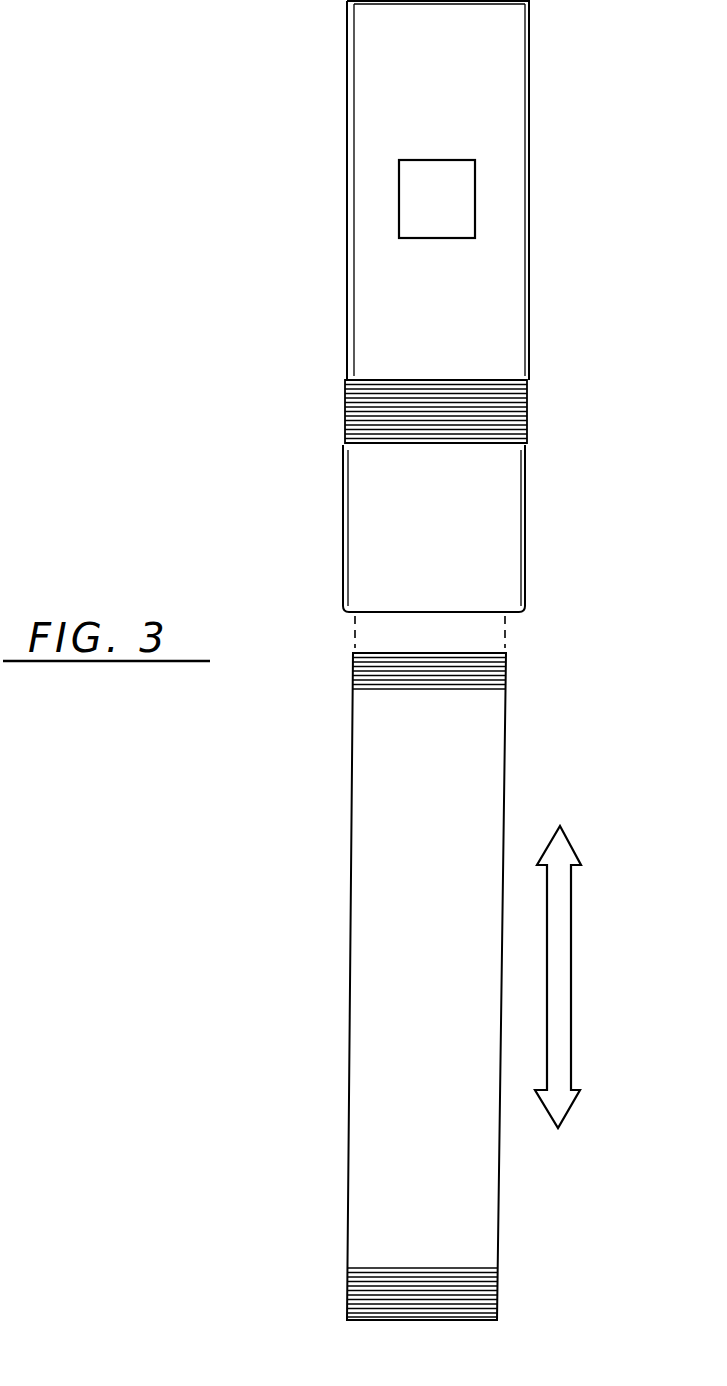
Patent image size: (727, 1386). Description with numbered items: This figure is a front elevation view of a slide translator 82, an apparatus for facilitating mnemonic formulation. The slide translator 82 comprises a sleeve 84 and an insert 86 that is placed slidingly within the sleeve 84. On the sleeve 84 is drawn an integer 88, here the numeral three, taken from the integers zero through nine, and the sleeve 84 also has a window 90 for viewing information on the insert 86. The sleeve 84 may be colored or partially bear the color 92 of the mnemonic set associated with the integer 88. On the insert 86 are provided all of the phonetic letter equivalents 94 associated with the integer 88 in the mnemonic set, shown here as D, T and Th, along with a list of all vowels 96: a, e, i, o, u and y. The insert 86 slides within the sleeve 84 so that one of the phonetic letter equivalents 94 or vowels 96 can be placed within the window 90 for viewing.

The slide translator 82 is at (566, 293).
The sleeve 84 is at (505, 541).
The insert 86 is at (495, 740).
The integer 88 is at (468, 82).
The window 90 is at (470, 208).
The color 92 is at (525, 420).
The phonetic letter equivalents 94 is at (402, 845).
The vowels 96 is at (408, 1228).